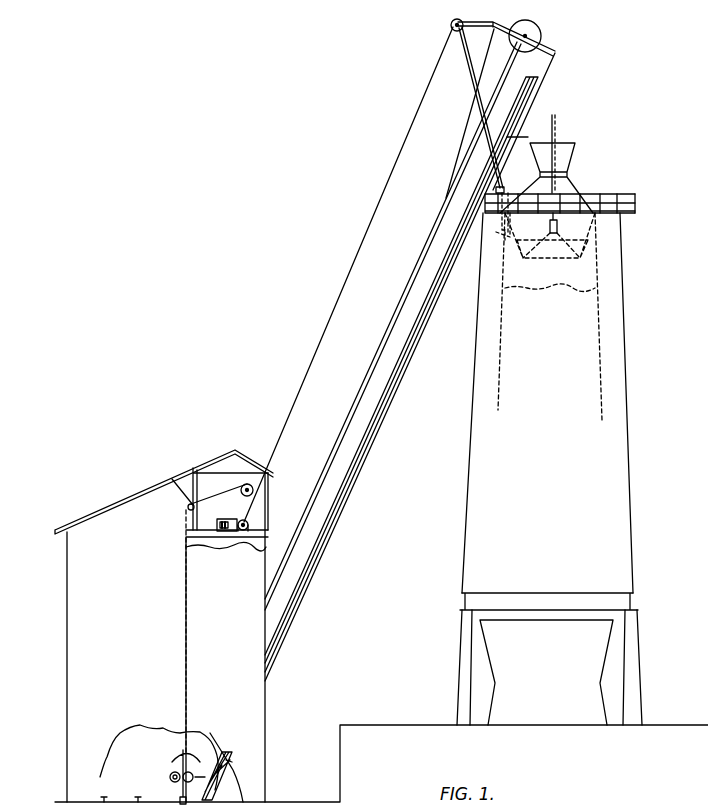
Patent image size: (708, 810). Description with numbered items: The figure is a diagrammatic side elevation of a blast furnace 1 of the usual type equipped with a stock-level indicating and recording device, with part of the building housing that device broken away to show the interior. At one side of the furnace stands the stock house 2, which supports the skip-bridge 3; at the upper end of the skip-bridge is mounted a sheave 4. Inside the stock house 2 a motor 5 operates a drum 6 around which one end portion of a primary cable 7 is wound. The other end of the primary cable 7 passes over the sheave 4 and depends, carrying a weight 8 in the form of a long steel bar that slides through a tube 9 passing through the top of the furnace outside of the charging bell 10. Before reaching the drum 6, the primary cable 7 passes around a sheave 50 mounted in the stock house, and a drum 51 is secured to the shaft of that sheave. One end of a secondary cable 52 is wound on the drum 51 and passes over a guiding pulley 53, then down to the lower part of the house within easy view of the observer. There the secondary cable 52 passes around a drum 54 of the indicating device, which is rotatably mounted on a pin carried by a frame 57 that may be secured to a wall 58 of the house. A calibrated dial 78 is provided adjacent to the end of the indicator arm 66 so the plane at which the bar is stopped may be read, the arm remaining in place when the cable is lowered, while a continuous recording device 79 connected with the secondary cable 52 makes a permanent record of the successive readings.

The blast furnace 1 is at (618, 359).
The stock house 2 is at (80, 630).
The skip-bridge 3 is at (390, 408).
The sheave 4 is at (451, 24).
The motor 5 is at (222, 520).
The drum 6 is at (250, 524).
The primary cable 7 is at (473, 78).
The weight 8 is at (505, 140).
The tube 9 is at (510, 222).
The charging bell 10 is at (595, 233).
The sheave 50 is at (250, 484).
The drum 51 is at (222, 492).
The secondary cable 52 is at (200, 472).
The guiding pulley 53 is at (188, 507).
The drum 54 is at (200, 777).
The frame 57 is at (232, 762).
The wall 58 is at (215, 752).
The indicator arm 66 is at (215, 753).
The dial 78 is at (180, 760).
The continuous recording device 79 is at (171, 775).